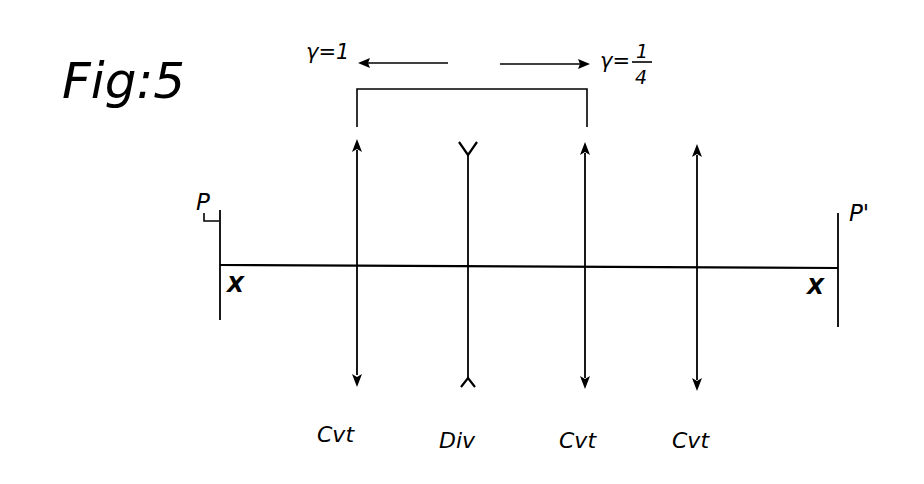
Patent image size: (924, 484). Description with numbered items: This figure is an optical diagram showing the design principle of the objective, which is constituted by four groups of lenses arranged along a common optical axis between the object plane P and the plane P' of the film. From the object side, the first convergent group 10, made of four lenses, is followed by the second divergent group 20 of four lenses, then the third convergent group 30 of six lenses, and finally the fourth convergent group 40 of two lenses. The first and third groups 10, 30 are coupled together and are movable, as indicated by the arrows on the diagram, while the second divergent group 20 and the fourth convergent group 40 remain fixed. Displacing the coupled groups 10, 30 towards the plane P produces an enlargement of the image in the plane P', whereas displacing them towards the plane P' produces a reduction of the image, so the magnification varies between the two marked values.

The first convergent group 10 is at (355, 277).
The second divergent group 20 is at (467, 279).
The third convergent group 30 is at (581, 280).
The fourth convergent group 40 is at (693, 281).